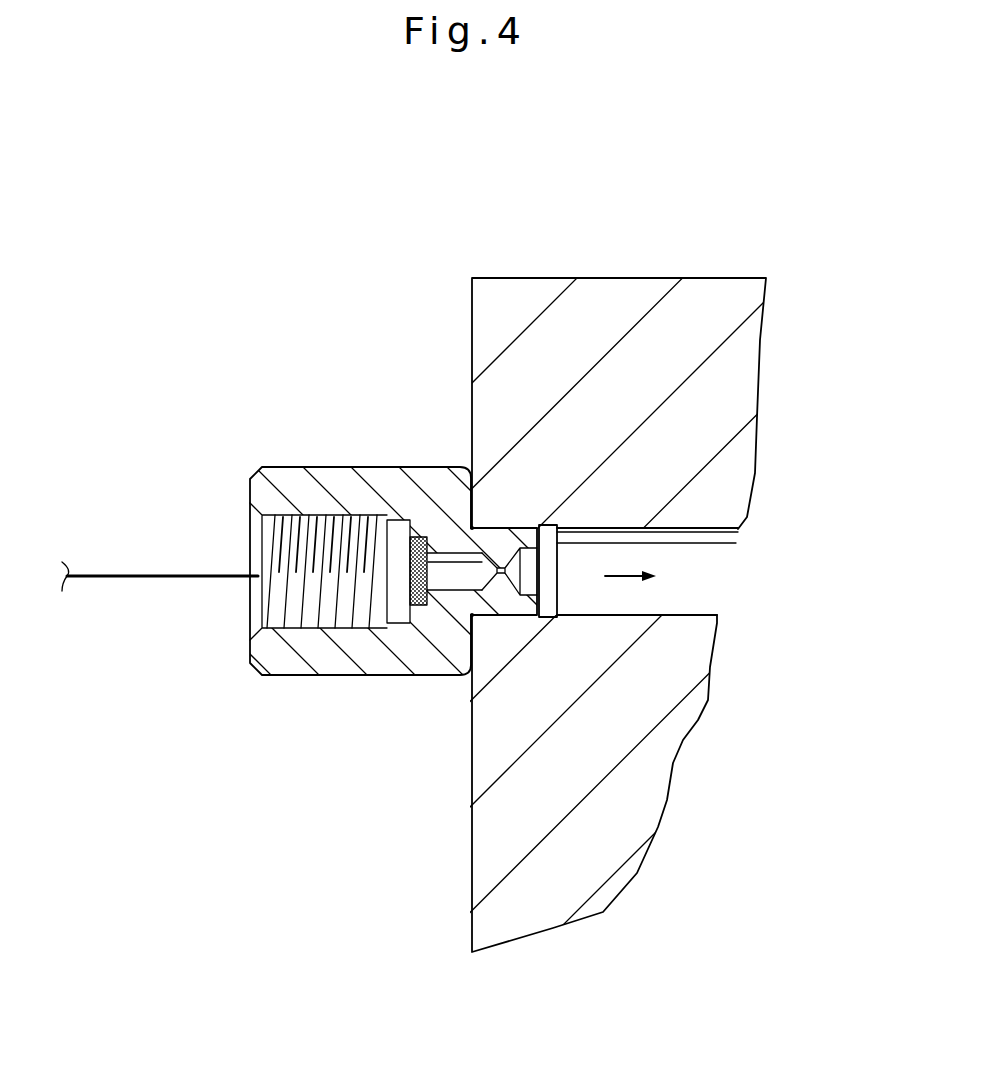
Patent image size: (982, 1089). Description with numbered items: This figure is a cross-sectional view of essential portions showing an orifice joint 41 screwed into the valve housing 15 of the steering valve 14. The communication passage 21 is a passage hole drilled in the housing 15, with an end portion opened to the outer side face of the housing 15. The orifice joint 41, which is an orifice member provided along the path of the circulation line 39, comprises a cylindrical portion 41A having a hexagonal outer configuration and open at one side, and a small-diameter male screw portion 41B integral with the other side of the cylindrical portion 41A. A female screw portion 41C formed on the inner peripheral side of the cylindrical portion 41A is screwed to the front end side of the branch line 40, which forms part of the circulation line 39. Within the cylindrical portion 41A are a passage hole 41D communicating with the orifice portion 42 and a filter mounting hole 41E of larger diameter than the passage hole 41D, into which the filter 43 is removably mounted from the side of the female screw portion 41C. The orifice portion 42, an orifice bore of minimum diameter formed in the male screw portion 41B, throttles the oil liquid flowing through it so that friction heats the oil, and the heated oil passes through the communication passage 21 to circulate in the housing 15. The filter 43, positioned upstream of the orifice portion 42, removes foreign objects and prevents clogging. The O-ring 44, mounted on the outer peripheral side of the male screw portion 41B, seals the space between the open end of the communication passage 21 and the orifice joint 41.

The steering valve 14 is at (491, 574).
The valve housing 15 is at (712, 412).
The communication passage 21 is at (693, 614).
The circulation line 39 is at (156, 577).
The branch line 40 is at (153, 578).
The orifice joint 41 is at (387, 554).
The cylindrical portion 41A is at (300, 657).
The male screw portion 41B is at (475, 525).
The female screw portion 41C is at (273, 525).
The passage hole 41D is at (443, 591).
The filter mounting hole 41E is at (410, 543).
The orifice portion 42 is at (502, 574).
The filter 43 is at (405, 582).
The O-ring 44 is at (509, 529).